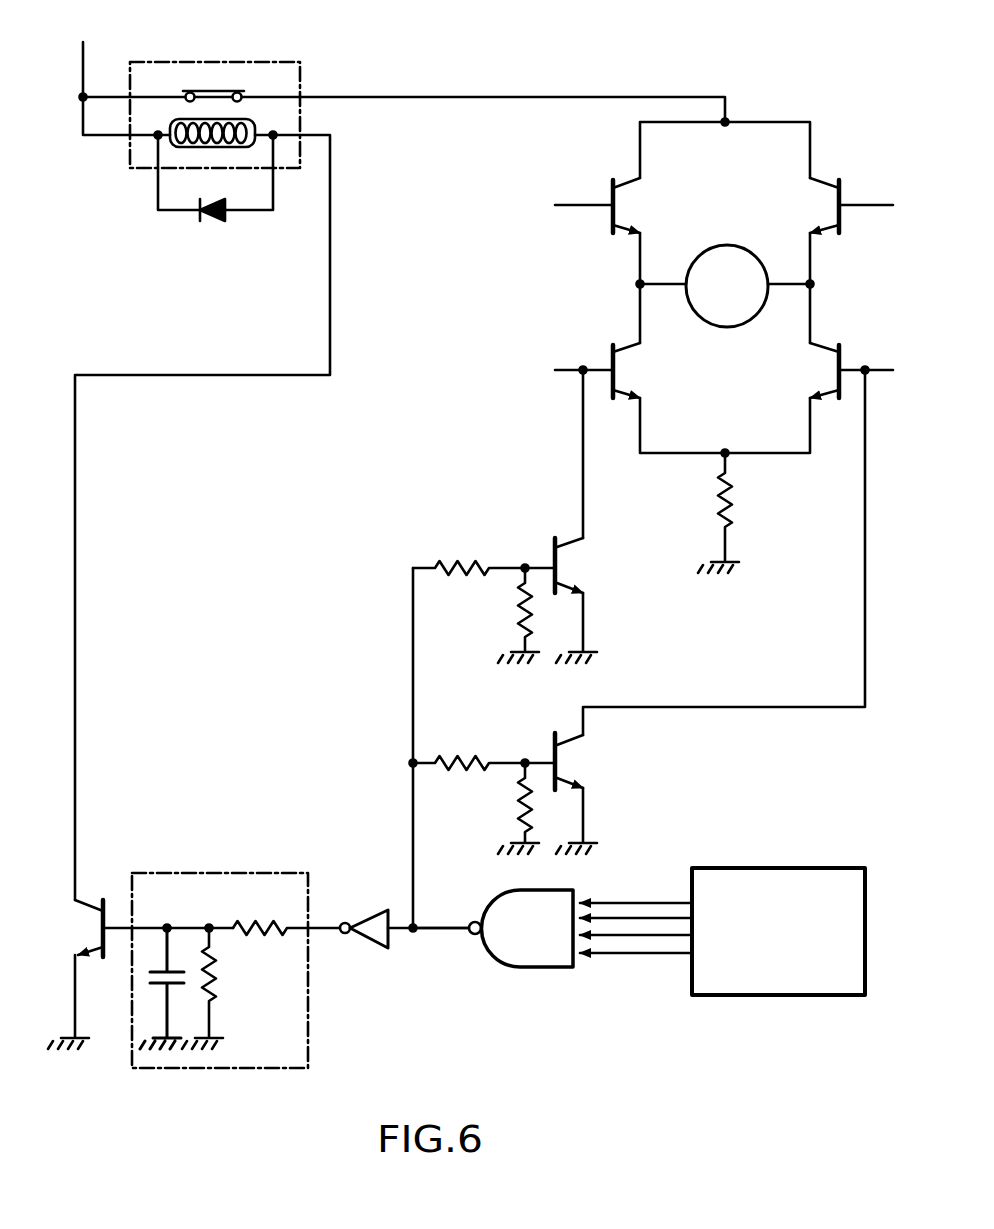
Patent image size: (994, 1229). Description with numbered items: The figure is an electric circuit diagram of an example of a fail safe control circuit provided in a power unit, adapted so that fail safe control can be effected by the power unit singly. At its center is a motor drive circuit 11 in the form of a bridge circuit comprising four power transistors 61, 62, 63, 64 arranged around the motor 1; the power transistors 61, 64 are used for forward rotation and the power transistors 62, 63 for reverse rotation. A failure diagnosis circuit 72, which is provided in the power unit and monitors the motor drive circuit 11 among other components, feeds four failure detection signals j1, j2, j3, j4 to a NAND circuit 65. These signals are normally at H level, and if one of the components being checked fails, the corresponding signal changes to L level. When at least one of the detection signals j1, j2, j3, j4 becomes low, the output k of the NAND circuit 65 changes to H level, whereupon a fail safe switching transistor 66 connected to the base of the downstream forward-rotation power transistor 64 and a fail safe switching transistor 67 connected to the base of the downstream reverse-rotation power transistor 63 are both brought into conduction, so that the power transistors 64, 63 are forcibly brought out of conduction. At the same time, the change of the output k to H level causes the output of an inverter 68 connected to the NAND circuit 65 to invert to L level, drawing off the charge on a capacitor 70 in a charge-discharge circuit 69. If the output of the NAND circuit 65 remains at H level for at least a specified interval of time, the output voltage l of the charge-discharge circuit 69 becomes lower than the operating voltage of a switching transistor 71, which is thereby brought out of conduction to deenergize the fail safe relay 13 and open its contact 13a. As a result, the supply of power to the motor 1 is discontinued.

The motor 1 is at (735, 330).
The motor drive circuit 11 is at (815, 100).
The fail safe relay 13 is at (302, 75).
The contact 13a is at (217, 88).
The power transistor 61 is at (610, 190).
The power transistor 62 is at (845, 185).
The power transistor 63 is at (608, 352).
The power transistor 64 is at (842, 350).
The NAND circuit 65 is at (533, 968).
The fail safe switching transistor 66 is at (553, 740).
The fail safe switching transistor 67 is at (553, 545).
The inverter 68 is at (378, 912).
The charge-discharge circuit 69 is at (217, 947).
The capacitor 70 is at (160, 982).
The switching transistor 71 is at (118, 898).
The failure diagnosis circuit 72 is at (783, 996).
The output voltage l is at (120, 922).
The output k is at (452, 936).
The failure detection signal j1 is at (627, 897).
The failure detection signal j2 is at (655, 914).
The failure detection signal j3 is at (625, 941).
The failure detection signal j4 is at (660, 959).